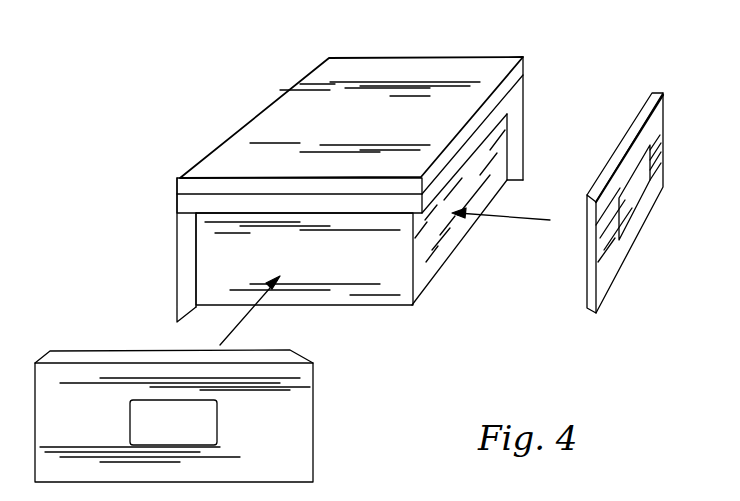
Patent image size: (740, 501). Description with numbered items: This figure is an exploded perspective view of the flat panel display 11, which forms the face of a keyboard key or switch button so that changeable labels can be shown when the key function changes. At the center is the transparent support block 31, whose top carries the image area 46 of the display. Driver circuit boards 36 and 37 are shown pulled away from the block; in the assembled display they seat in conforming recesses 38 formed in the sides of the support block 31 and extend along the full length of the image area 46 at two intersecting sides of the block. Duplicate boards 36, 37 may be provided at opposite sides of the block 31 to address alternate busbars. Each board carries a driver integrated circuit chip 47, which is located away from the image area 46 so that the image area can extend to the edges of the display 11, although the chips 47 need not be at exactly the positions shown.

The display 11 is at (380, 259).
The transparent support block 31 is at (350, 270).
The driver circuit board 36 is at (523, 150).
The driver circuit board 37 is at (177, 287).
The conforming recesses 38 is at (503, 118).
The image area 46 is at (410, 35).
The driver integrated circuit chip 47 is at (652, 160).